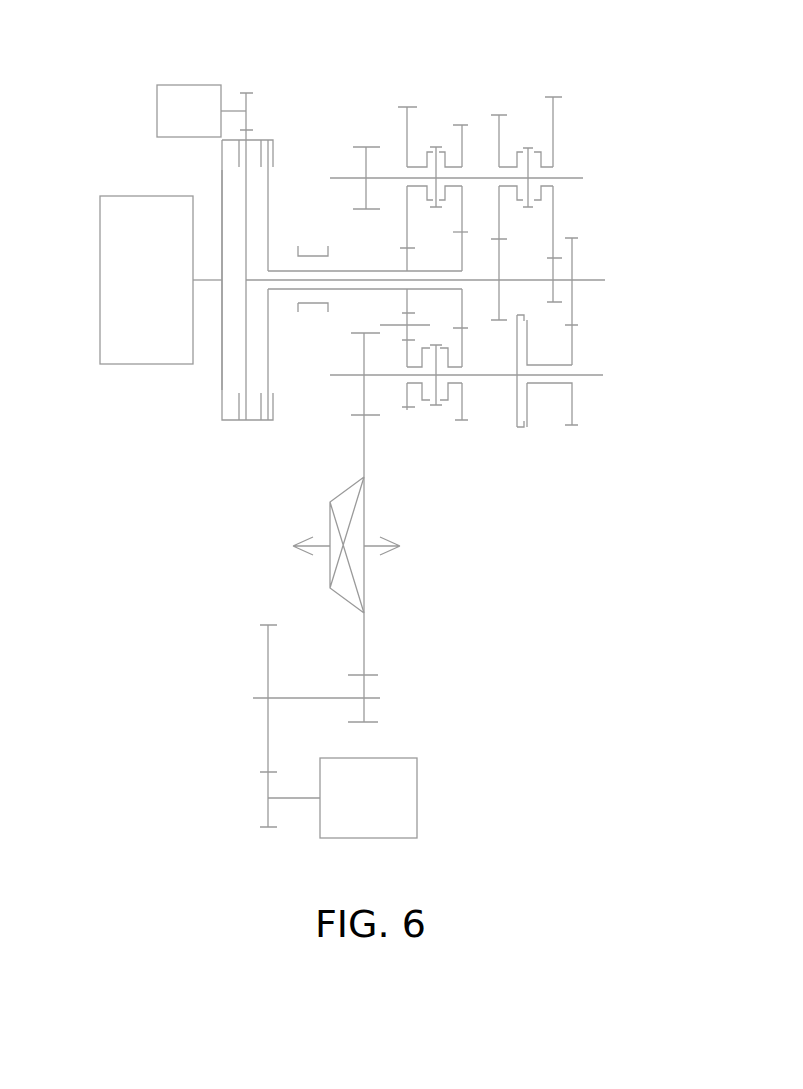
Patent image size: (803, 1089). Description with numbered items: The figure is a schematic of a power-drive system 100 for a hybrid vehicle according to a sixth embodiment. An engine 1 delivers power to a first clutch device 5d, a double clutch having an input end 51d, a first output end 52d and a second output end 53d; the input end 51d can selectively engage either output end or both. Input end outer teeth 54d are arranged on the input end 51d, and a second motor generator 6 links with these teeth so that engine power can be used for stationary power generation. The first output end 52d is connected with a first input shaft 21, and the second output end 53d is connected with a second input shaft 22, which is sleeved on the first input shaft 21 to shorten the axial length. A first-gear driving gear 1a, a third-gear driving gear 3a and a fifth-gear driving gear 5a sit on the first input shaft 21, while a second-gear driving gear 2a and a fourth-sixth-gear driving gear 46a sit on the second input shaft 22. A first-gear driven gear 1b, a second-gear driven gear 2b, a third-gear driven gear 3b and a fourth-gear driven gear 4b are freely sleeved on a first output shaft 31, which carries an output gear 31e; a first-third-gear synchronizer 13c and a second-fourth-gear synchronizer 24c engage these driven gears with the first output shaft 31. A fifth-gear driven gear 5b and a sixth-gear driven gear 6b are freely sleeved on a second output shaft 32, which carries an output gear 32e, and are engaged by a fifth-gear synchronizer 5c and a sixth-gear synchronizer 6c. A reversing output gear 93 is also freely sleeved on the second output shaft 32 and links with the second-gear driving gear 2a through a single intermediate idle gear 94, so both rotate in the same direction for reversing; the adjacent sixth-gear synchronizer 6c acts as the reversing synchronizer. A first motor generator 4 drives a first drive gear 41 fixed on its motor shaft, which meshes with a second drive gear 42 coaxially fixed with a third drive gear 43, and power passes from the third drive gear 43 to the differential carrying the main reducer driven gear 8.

The power-drive system 100 is at (692, 116).
The engine 1 is at (100, 253).
The second motor generator 6 is at (177, 113).
The input end outer teeth 54d is at (245, 135).
The first clutch device 5d is at (201, 297).
The input end 51d is at (222, 357).
The first output end 52d is at (243, 380).
The second output end 53d is at (267, 390).
The first input shaft 21 is at (605, 280).
The second input shaft 22 is at (328, 290).
The second-gear driving gear 2a is at (405, 257).
The fourth-sixth-gear driving gear 46a is at (462, 245).
The intermediate idle gear 94 is at (393, 325).
The first output shaft 31 is at (566, 177).
The first output shaft output gear 31e is at (353, 147).
The second-gear driven gear 2b is at (407, 107).
The fourth-gear driven gear 4b is at (462, 124).
The second-fourth-gear synchronizer 24c is at (438, 146).
The third-gear driven gear 3b is at (500, 114).
The first-gear driven gear 1b is at (554, 121).
The first-third-gear synchronizer 13c is at (530, 148).
The third-gear driving gear 3a is at (500, 263).
The first-gear driving gear 1a is at (553, 263).
The fifth-gear driving gear 5a is at (572, 302).
The second output shaft 32 is at (603, 375).
The second output shaft output gear 32e is at (360, 390).
The sixth-gear synchronizer 6c is at (436, 405).
The sixth-gear driven gear 6b is at (461, 392).
The reversing output gear 93 is at (408, 400).
The fifth-gear synchronizer 5c is at (517, 423).
The fifth-gear driven gear 5b is at (572, 403).
The main reducer driven gear 8 is at (363, 450).
The third drive gear 43 is at (365, 685).
The second drive gear 42 is at (265, 718).
The first drive gear 41 is at (268, 788).
The first motor generator 4 is at (382, 808).